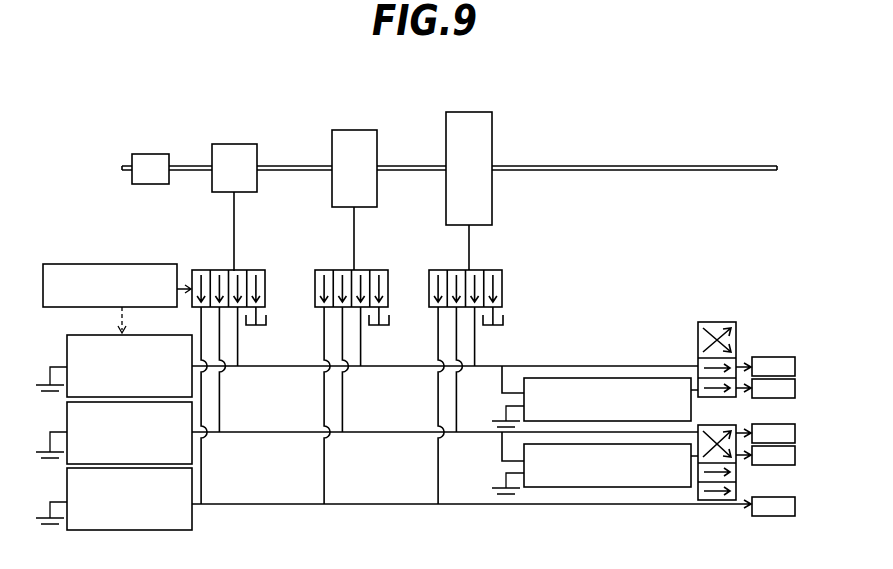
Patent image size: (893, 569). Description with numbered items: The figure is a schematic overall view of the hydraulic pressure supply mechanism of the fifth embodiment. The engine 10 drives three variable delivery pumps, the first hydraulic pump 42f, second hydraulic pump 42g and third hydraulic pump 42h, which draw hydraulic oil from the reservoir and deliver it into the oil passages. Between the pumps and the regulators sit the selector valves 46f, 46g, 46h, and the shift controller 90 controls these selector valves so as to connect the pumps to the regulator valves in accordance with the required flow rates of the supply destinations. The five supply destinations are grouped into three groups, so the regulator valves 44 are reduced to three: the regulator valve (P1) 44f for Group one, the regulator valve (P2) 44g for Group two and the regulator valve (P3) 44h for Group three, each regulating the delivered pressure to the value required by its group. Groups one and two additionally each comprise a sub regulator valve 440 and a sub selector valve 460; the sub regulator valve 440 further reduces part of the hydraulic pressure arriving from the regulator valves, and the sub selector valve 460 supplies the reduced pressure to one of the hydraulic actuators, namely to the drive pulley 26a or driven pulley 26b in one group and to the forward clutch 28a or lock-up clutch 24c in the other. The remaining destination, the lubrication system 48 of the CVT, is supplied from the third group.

The engine 10 is at (147, 154).
The first hydraulic pump 42f is at (250, 144).
The second hydraulic pump 42g is at (371, 130).
The third hydraulic pump 42h is at (488, 112).
The selector valve 46f is at (253, 270).
The selector valve 46g is at (366, 270).
The selector valve 46h is at (494, 270).
The regulator valves 44 is at (71, 324).
The regulator valve (P1) 44f is at (67, 357).
The regulator valve (P2) 44g is at (67, 423).
The regulator valve (P3) 44h is at (67, 488).
The shift controller 90 is at (153, 264).
The sub regulator valve 440 is at (535, 378).
The sub selector valve 460 is at (698, 336).
The drive pulley 26a is at (766, 357).
The driven pulley 26b is at (797, 388).
The forward clutch 28a is at (796, 434).
The lock-up clutch 24c is at (760, 466).
The lubrication system 48 is at (772, 517).